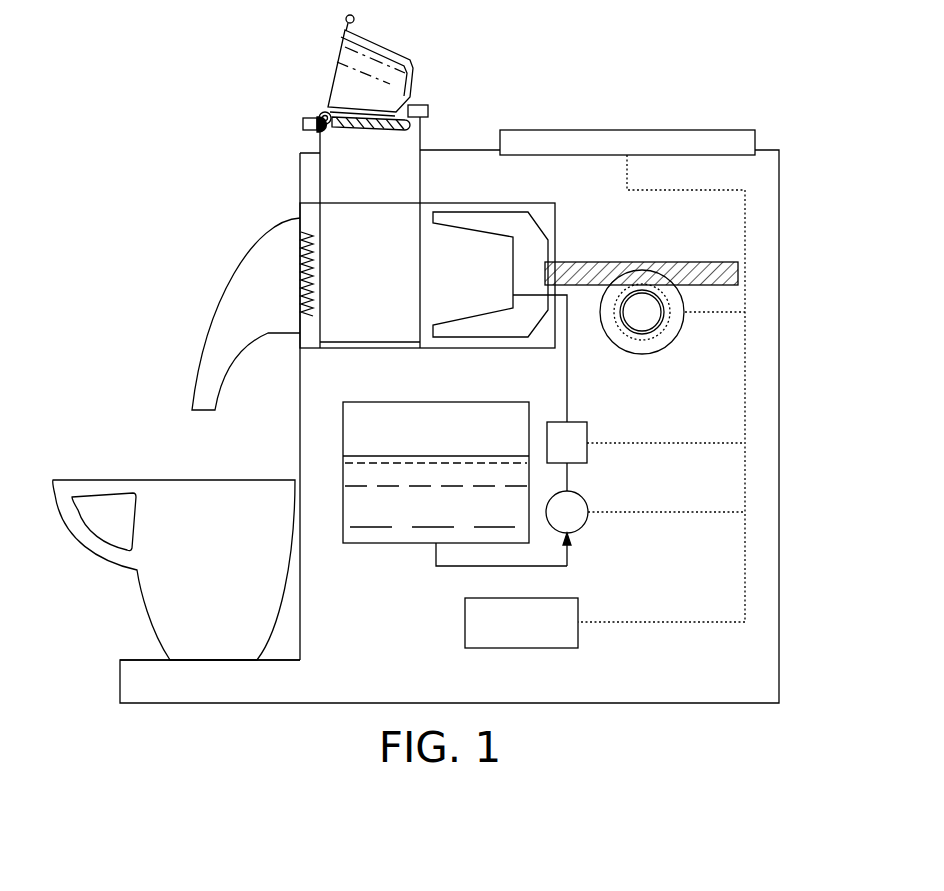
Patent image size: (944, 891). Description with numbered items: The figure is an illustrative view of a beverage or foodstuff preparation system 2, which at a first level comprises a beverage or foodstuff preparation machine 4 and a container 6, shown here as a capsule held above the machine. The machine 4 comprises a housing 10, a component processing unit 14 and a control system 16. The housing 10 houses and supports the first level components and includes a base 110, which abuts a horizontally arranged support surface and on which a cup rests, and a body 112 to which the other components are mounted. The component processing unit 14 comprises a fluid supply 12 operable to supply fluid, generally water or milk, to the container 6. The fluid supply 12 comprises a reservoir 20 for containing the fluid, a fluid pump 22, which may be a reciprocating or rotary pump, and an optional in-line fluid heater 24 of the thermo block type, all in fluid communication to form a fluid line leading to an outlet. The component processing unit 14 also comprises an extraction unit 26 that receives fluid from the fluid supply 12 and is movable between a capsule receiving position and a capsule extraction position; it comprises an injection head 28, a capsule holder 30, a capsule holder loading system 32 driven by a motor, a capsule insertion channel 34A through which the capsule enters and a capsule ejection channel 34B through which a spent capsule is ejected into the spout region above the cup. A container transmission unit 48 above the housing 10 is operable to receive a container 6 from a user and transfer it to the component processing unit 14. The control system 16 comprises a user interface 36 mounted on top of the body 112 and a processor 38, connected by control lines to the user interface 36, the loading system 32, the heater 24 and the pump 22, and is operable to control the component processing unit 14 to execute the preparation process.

The beverage or foodstuff preparation system 2 is at (771, 52).
The beverage or foodstuff preparation machine 4 is at (621, 100).
The container 6 is at (353, 99).
The housing 10 is at (788, 210).
The fluid supply 12 is at (593, 295).
The component processing unit 14 is at (157, 205).
The extraction unit 26 is at (198, 314).
The control system 16 is at (465, 655).
The reservoir 20 is at (424, 440).
The fluid pump 22 is at (556, 524).
The fluid heater 24 is at (556, 455).
The injection head 28 is at (555, 355).
The capsule holder 30 is at (320, 355).
The capsule holder loading system 32 is at (560, 256).
The capsule insertion channel 34A is at (327, 194).
The capsule ejection channel 34B is at (316, 331).
The user interface 36 is at (728, 130).
The processor 38 is at (508, 634).
The container transmission unit 48 is at (157, 15).
The base 110 is at (218, 705).
The body 112 is at (788, 168).